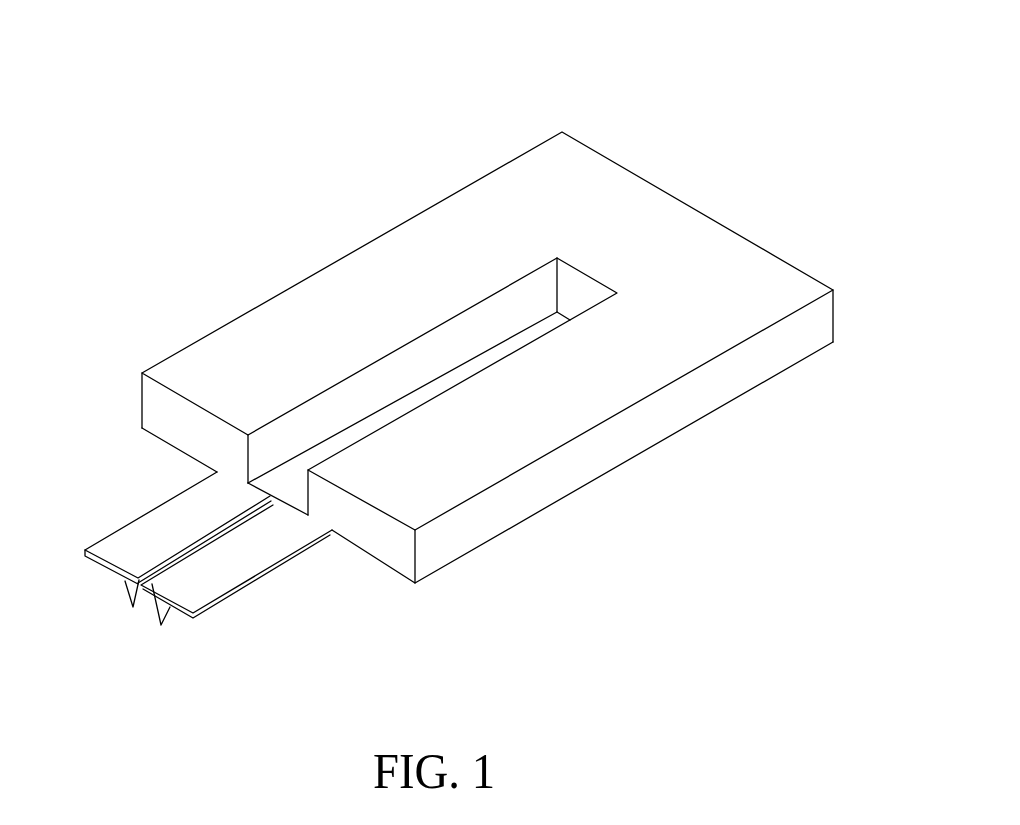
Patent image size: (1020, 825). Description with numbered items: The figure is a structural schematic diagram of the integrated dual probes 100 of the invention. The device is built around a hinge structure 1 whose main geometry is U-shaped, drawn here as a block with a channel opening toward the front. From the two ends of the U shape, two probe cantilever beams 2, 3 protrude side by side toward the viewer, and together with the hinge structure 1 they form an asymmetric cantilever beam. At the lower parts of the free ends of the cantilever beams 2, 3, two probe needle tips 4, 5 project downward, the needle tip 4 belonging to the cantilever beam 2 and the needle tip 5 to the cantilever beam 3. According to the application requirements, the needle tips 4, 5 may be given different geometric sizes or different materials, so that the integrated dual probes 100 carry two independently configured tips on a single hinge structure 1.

The integrated dual probes 100 is at (236, 220).
The hinge structure 1 is at (437, 218).
The probe cantilever beam 2 is at (138, 528).
The probe cantilever beam 3 is at (260, 563).
The probe tip 4 is at (122, 594).
The probe tip 5 is at (166, 610).